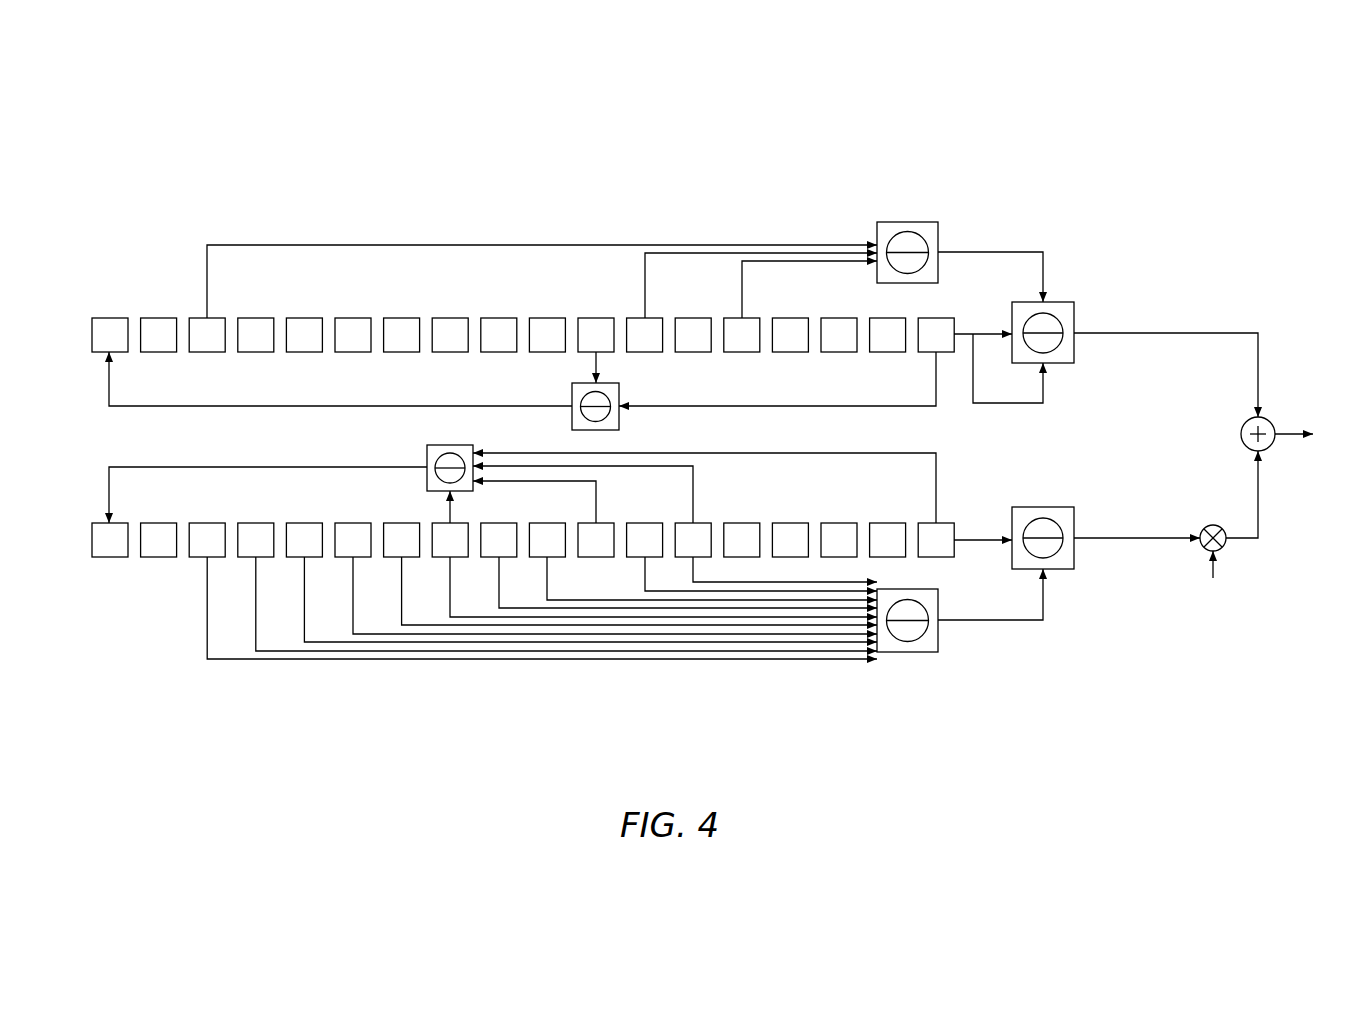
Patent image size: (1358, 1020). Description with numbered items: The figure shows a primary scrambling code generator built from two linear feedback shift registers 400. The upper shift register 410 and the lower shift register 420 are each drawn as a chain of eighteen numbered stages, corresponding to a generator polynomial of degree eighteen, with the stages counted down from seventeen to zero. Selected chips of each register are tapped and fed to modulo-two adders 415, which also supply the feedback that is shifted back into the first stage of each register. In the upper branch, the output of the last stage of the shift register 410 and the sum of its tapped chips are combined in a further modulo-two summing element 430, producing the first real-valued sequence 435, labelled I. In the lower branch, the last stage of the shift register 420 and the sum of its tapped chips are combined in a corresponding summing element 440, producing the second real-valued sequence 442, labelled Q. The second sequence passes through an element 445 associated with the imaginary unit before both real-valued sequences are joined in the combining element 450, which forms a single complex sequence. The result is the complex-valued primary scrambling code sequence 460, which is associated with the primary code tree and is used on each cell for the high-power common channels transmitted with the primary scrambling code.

The linear feedback shift registers 400 is at (1112, 135).
The shift register 410 is at (86, 335).
The modulo-2 adder 415 is at (935, 222).
The shift register 420 is at (86, 540).
The I-branch modulo-2 adder 430 is at (1070, 302).
The real-valued sequence 435 is at (1176, 330).
The Q-branch modulo-2 adder 440 is at (1062, 570).
The real-valued sequence 442 is at (1124, 534).
The multiplier (by j) 445 is at (1206, 524).
The combining 450 is at (1245, 420).
The scrambling code sequence 460 is at (1286, 430).